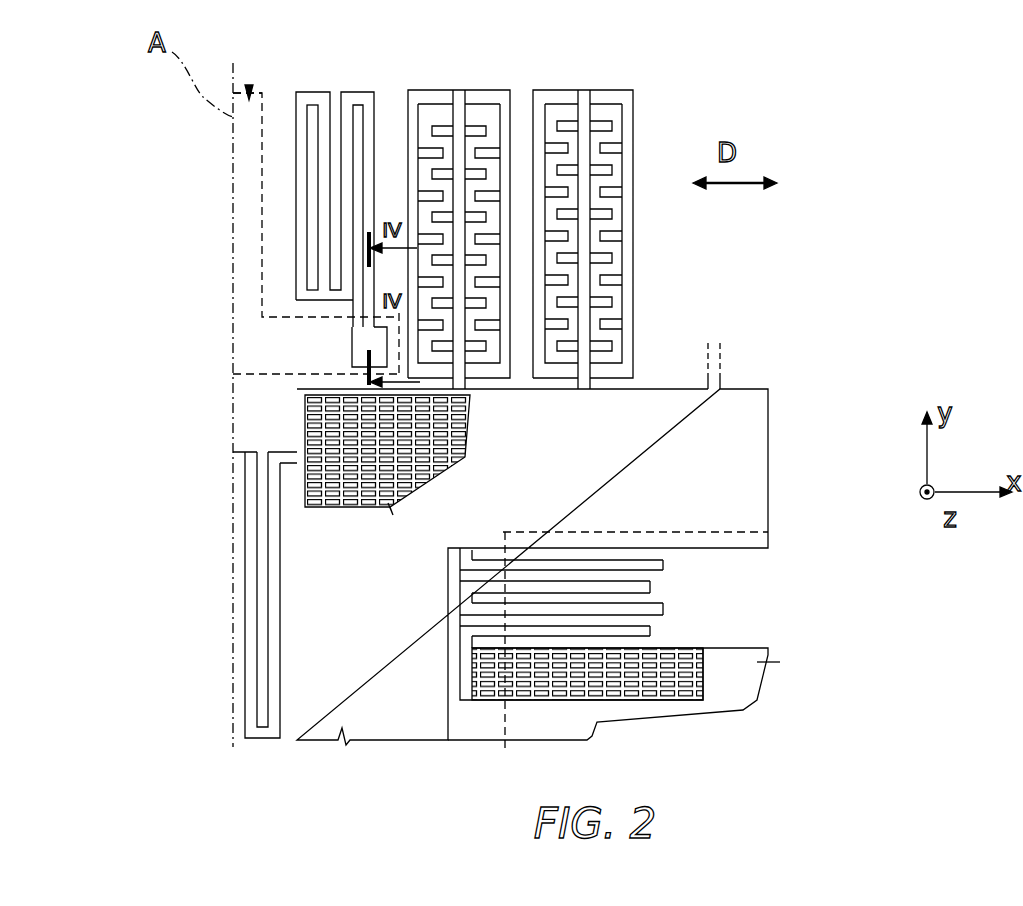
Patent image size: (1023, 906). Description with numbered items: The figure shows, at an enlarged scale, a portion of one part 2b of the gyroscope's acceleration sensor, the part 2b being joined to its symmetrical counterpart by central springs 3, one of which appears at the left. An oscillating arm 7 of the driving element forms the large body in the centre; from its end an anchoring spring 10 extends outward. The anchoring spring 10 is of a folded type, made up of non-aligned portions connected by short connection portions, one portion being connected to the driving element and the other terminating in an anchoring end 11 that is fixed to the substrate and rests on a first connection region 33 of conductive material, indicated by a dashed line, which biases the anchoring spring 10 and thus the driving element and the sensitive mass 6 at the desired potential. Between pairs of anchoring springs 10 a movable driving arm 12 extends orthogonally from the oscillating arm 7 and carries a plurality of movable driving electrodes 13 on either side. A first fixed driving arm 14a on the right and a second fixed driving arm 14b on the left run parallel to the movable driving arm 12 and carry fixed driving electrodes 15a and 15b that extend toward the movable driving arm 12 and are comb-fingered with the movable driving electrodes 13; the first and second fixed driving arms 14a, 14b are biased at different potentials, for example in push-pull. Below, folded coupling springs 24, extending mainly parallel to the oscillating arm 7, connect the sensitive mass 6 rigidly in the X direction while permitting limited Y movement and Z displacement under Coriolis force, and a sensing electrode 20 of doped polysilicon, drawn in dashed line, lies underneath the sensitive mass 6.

The part of the acceleration sensor 2b is at (788, 316).
The central spring 3 is at (250, 653).
The sensitive mass 6 is at (740, 694).
The oscillating arm 7 is at (758, 476).
The anchoring spring 10 is at (320, 193).
The anchoring end 11 is at (367, 352).
The movable driving arm 12 is at (458, 97).
The movable driving electrode 13 is at (472, 162).
The first fixed driving arm 14a is at (635, 237).
The second fixed driving arm 14b is at (414, 122).
The fixed driving electrode 15a is at (620, 330).
The fixed driving electrode 15b is at (445, 125).
The sensing electrode 20 is at (662, 537).
The coupling spring 24 is at (642, 600).
The first connection region 33 is at (237, 142).